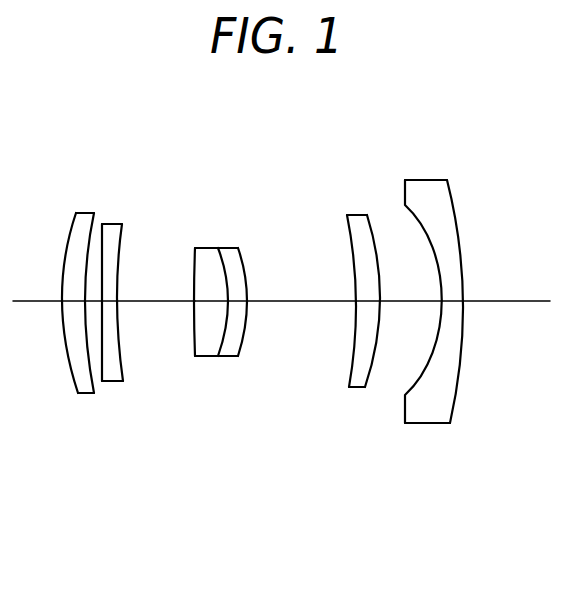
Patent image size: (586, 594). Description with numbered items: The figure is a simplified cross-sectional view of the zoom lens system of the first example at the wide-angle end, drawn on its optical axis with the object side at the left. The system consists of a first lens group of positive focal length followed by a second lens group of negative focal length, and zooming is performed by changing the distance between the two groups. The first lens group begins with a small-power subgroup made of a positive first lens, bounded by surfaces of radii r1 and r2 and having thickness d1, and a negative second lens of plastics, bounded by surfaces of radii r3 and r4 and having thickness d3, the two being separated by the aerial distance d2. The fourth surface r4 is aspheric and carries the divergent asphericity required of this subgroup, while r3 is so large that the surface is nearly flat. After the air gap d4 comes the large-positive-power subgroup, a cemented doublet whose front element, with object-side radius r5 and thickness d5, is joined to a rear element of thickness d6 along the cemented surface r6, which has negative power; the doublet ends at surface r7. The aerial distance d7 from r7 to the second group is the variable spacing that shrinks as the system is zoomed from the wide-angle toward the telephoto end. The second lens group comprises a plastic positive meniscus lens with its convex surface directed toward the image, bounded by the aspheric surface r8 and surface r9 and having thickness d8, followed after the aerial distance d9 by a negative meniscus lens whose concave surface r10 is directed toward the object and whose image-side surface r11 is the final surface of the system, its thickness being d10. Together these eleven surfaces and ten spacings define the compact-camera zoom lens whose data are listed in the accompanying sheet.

The radius of curvature of first lens surface r1 is at (76, 213).
The radius of curvature of second lens surface r2 is at (95, 213).
The radius of curvature of third lens surface r3 is at (102, 224).
The radius of curvature of fourth lens surface r4 is at (122, 224).
The radius of curvature of fifth lens surface r5 is at (195, 248).
The radius of curvature of sixth lens surface r6 is at (218, 248).
The radius of curvature of seventh lens surface r7 is at (238, 248).
The radius of curvature of eighth lens surface r8 is at (347, 215).
The radius of curvature of ninth lens surface r9 is at (367, 215).
The radius of curvature of tenth lens surface r10 is at (405, 180).
The radius of curvature of eleventh lens surface r11 is at (447, 180).
The thickness of first lens d1 is at (73, 301).
The aerial distance between second and third surfaces d2 is at (93, 301).
The thickness of second lens d3 is at (110, 301).
The aerial distance between fourth and fifth surfaces d4 is at (155, 301).
The thickness of third lens d5 is at (208, 301).
The thickness of fourth lens d6 is at (240, 301).
The aerial distance between first and second lens groups d7 is at (305, 301).
The thickness of positive meniscus lens 2-1 d8 is at (368, 301).
The aerial distance between ninth and tenth surfaces d9 is at (397, 301).
The thickness of negative meniscus lens 2-2 d10 is at (450, 301).